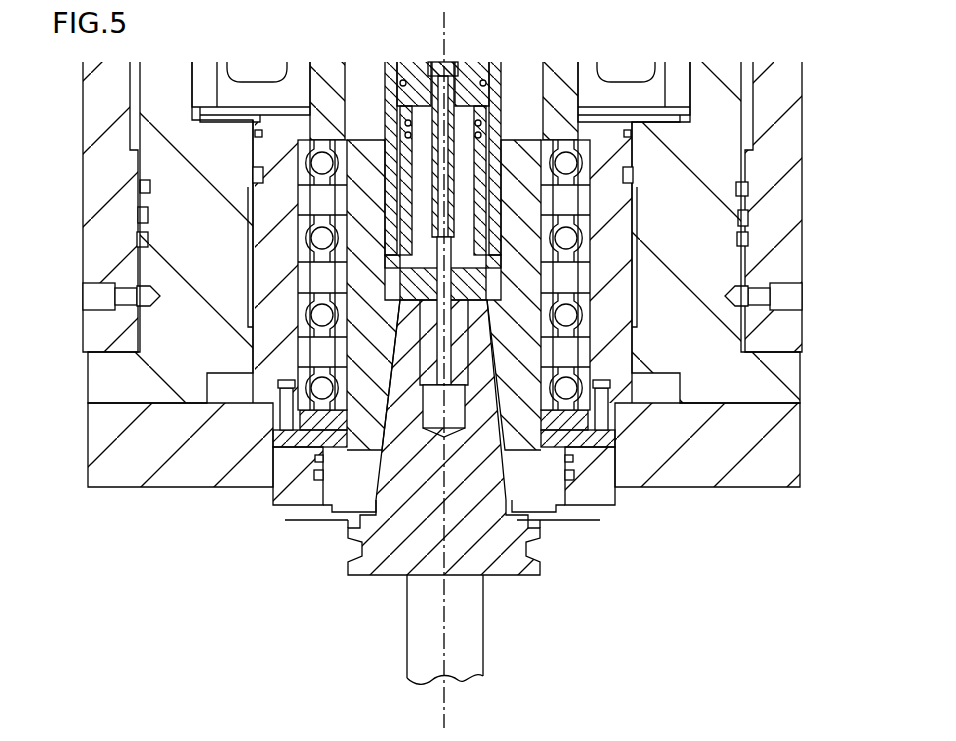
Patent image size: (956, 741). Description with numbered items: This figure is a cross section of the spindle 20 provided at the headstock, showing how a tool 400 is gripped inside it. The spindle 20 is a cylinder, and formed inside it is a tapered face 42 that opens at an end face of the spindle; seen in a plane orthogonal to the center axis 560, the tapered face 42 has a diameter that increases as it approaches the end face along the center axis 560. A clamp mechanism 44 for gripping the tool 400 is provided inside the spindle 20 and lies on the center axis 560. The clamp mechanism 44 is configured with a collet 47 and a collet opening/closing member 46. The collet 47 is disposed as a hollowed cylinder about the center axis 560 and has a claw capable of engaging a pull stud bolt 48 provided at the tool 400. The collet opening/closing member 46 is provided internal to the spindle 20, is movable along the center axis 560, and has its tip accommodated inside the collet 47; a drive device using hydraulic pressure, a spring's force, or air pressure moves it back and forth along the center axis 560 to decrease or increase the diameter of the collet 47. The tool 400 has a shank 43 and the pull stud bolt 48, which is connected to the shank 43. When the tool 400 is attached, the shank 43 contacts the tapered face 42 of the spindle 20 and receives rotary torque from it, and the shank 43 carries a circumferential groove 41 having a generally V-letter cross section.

The spindle 20 is at (362, 205).
The circumferential groove 41 is at (533, 542).
The tapered face 42 is at (470, 463).
The shank 43 is at (510, 490).
The clamp mechanism 44 is at (383, 163).
The collet opening/closing member 46 is at (455, 120).
The collet 47 is at (472, 168).
The pull stud bolt 48 is at (487, 245).
The tool 400 is at (541, 567).
The center axis 560 is at (446, 722).